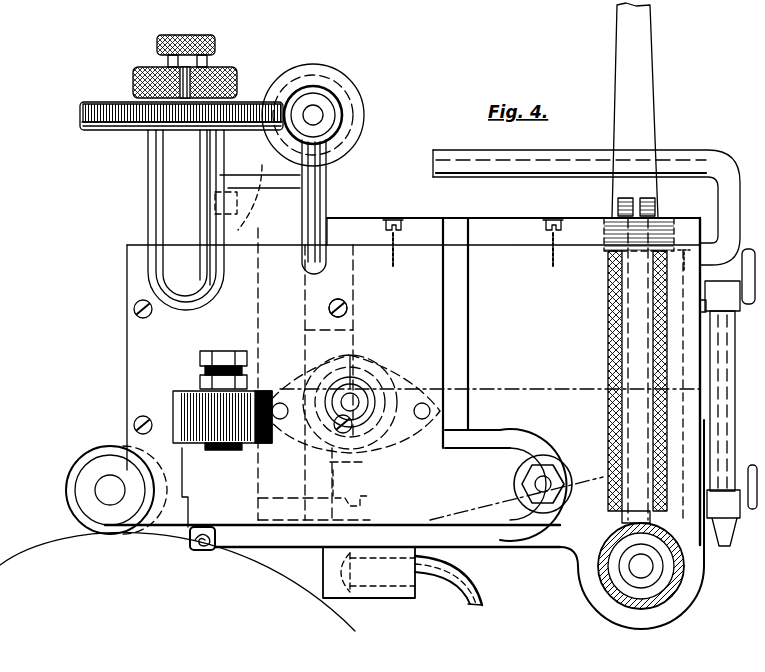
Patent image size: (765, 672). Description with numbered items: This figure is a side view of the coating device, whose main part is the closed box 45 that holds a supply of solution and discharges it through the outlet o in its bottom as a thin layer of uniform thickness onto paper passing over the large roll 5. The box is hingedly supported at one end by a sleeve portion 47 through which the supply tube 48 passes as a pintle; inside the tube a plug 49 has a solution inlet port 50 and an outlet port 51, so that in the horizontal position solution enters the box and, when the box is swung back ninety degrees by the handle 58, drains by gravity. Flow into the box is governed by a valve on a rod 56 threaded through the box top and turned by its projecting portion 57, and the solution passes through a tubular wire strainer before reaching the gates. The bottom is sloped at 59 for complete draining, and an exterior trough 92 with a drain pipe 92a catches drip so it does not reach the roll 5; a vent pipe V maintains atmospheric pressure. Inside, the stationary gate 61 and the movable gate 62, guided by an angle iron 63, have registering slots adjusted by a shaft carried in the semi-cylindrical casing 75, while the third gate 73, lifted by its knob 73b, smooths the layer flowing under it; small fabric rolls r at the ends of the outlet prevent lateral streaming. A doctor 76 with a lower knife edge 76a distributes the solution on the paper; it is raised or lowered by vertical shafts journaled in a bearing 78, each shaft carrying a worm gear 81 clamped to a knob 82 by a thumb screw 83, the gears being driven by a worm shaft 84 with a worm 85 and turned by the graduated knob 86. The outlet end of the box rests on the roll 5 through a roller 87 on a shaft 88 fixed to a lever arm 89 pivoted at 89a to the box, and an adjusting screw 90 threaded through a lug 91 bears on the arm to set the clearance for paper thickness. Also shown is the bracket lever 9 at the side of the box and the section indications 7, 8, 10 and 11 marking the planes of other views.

The roll 5 is at (18, 582).
The section line 7- 7 is at (172, 18).
The section line 8- 8 is at (313, 142).
The bracket lever 9 is at (740, 520).
The section line 10- 10 is at (263, 645).
The section line 11- 11 is at (636, 190).
The closed box 45 is at (370, 217).
The sleeve portion 47 is at (680, 626).
The supply tube 48 is at (688, 578).
The plug 49 is at (628, 590).
The solution inlet port 50 is at (600, 556).
The solution outlet port 51 is at (634, 568).
The rod 56 is at (608, 352).
The projecting portion of the rod 57 is at (645, 212).
The handle 58 is at (640, 61).
The sloped bottom portion 59 is at (496, 512).
The stationary gate 61 is at (330, 332).
The movable gate 62 is at (366, 463).
The angle iron 63 is at (368, 496).
The third gate 73 is at (250, 283).
The lifting knob 73b is at (248, 186).
The semi-cylindrical casing 75 is at (388, 380).
The doctor 76 is at (178, 325).
The lower knife edge 76a is at (190, 548).
The bearing 78 is at (148, 182).
The worm gear 81 is at (81, 113).
The knob 82 is at (135, 84).
The thumb screw 83 is at (160, 42).
The worm shaft 84 is at (313, 115).
The worm 85 is at (340, 118).
The graduated knob 86 is at (362, 103).
The roller 87 is at (100, 460).
The shaft 88 is at (110, 490).
The lever arm 89 is at (543, 454).
The pivot 89a is at (560, 468).
The adjusting screw 90 is at (200, 365).
The lug 91 is at (173, 405).
The trough 92 is at (394, 600).
The pipe 92a is at (460, 605).
The vent pipe V is at (702, 150).
The outlet o is at (205, 540).
The small roll r is at (198, 548).